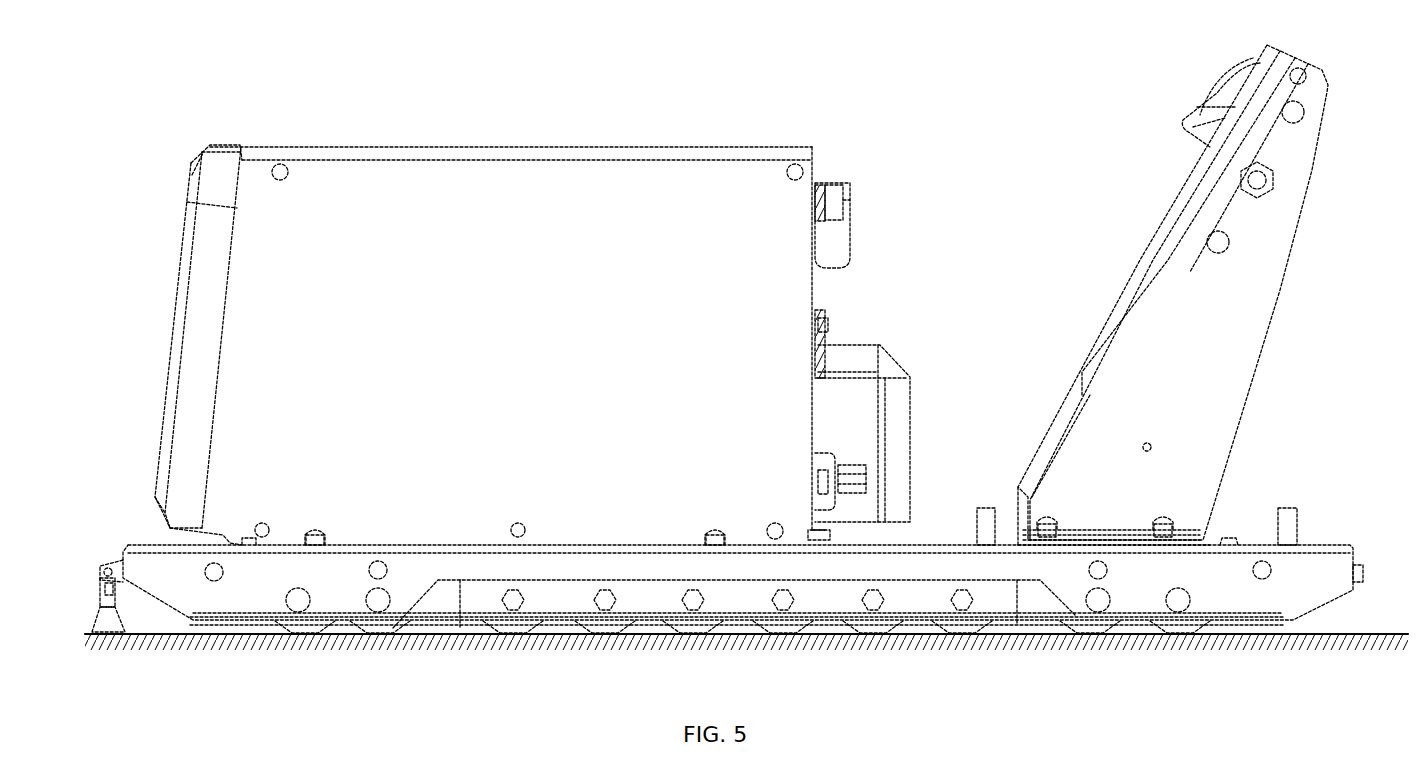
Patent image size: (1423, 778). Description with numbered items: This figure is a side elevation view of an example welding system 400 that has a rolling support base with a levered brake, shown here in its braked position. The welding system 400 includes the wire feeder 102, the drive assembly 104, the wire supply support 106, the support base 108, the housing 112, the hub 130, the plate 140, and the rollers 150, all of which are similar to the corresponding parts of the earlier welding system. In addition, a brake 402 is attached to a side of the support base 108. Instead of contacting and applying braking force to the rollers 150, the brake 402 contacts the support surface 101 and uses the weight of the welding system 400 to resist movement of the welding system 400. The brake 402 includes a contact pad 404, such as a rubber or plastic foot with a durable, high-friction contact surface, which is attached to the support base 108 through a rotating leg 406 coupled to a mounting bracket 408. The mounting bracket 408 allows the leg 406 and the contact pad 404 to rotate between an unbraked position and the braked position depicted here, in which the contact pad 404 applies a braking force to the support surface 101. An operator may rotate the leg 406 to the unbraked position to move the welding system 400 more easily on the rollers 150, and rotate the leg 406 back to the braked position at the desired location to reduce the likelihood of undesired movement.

The welding system 400 is at (729, 360).
The support surface 101 is at (751, 630).
The wire feeder 102 is at (569, 317).
The housing 112 is at (511, 143).
The drive assembly 104 is at (849, 206).
The plate 140 is at (899, 427).
The brake 402 is at (701, 588).
The contact pad 404 is at (82, 613).
The rotating leg 406 is at (80, 590).
The mounting bracket 408 is at (86, 559).
The rollers 150 is at (713, 659).
The wire supply support 106 is at (1193, 295).
The hub 130 is at (1304, 229).
The support base 108 is at (1177, 526).